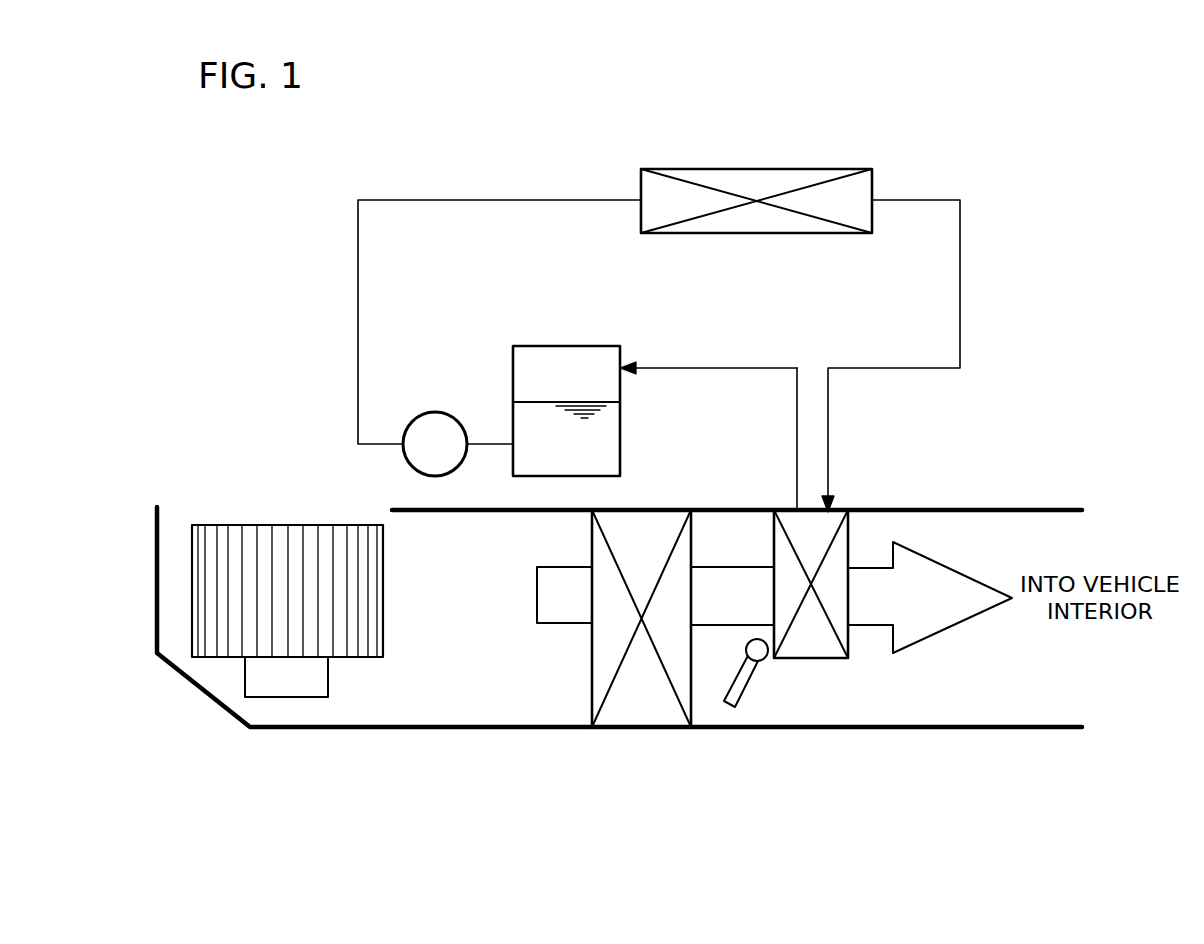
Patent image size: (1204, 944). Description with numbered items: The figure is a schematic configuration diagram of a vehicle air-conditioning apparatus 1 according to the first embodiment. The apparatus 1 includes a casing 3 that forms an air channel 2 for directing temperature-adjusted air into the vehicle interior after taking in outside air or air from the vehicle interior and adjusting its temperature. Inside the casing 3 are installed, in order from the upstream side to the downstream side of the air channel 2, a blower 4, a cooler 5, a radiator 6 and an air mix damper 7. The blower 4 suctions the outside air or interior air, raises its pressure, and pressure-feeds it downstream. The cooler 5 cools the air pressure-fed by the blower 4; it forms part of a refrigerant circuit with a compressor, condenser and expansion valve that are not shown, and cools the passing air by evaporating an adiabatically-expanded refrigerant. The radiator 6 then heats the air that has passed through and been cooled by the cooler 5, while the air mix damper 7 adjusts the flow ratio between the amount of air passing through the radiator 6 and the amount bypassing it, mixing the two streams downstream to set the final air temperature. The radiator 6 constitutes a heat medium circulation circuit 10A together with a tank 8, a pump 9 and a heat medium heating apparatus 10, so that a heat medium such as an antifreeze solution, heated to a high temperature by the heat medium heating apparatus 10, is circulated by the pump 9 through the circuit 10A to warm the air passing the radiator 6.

The vehicle air-conditioning apparatus 1 is at (619, 676).
The air channel 2 is at (432, 690).
The casing 3 is at (940, 731).
The blower 4 is at (250, 525).
The cooler 5 is at (645, 708).
The radiator 6 is at (822, 658).
The air mix damper 7 is at (745, 689).
The tank 8 is at (563, 345).
The pump 9 is at (434, 412).
The heat medium heating apparatus 10 is at (771, 168).
The heat medium circulation circuit 10A is at (458, 190).